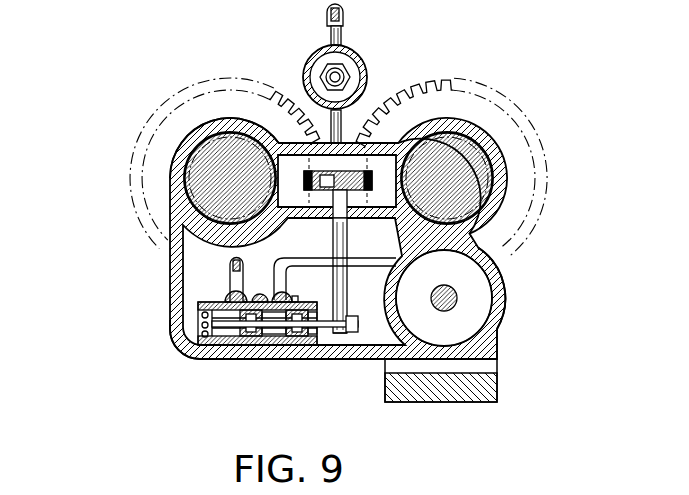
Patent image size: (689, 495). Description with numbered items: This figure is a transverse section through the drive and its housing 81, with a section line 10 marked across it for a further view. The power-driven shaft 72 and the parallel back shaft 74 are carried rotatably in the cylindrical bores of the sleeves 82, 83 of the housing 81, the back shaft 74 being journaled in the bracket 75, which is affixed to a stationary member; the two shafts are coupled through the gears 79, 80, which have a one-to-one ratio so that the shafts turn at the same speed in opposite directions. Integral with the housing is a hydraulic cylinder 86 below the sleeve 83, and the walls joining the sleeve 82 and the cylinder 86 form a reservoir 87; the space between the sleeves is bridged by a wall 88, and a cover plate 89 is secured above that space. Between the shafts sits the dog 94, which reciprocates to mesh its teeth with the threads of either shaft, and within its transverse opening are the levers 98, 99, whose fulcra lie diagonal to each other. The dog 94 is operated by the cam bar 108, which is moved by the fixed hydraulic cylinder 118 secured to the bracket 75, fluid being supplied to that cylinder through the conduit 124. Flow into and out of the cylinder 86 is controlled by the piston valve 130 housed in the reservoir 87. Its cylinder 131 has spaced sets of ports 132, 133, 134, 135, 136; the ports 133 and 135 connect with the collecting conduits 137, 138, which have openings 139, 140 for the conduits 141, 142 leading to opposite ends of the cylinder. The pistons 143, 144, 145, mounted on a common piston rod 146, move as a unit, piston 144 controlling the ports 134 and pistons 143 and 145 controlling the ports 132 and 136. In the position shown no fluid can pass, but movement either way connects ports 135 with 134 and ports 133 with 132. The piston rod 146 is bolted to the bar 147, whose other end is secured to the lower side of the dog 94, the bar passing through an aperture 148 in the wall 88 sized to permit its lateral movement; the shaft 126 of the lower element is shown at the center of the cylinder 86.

The section line 10- 10 is at (127, 180).
The power-driven shaft 72 is at (213, 185).
The back shaft 74 is at (470, 190).
The bracket 75 is at (488, 393).
The gear 79 is at (190, 87).
The gear 80 is at (433, 82).
The housing 81 is at (148, 345).
The sleeve 82 is at (178, 150).
The sleeve 83 is at (501, 152).
The hydraulic cylinder 86 is at (503, 323).
The reservoir 87 is at (188, 268).
The wall 88 is at (405, 262).
The cover plate 89 is at (348, 143).
The dog 94 is at (292, 150).
The lever 98 is at (338, 181).
The lever 99 is at (353, 170).
The cam bar 108 is at (350, 218).
The fixed hydraulic cylinder 118 is at (363, 60).
The conduit 124 is at (343, 27).
The lower roller shaft 126 is at (476, 305).
The piston valve 130 is at (178, 333).
The cylinder 131 is at (203, 360).
The ports 132 is at (202, 318).
The ports 133 is at (245, 348).
The ports 134 is at (258, 292).
The ports 135 is at (290, 348).
The ports 136 is at (286, 301).
The collecting conduit 137 is at (222, 302).
The collecting conduit 138 is at (289, 297).
The opening 139 is at (232, 281).
The opening 140 is at (294, 263).
The conduit 141 is at (231, 264).
The conduit 142 is at (364, 266).
The piston 143 is at (218, 348).
The piston 144 is at (266, 348).
The piston 145 is at (313, 348).
The piston rod 146 is at (333, 342).
The bar 147 is at (342, 307).
The aperture 148 is at (321, 218).